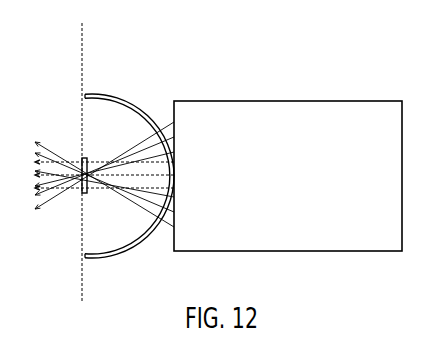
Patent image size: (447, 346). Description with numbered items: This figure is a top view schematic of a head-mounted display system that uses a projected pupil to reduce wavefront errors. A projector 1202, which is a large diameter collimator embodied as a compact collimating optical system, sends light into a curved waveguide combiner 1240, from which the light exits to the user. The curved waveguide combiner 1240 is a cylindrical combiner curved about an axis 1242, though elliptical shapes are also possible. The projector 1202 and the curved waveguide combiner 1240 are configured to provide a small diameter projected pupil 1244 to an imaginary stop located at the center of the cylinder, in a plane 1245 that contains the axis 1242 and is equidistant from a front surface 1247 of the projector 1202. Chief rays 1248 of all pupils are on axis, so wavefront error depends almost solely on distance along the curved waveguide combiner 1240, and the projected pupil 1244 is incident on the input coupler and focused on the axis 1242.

The projector 1202 is at (377, 100).
The curved waveguide combiner 1240 is at (109, 93).
The axis 1242 is at (80, 186).
The projected pupil 1244 is at (83, 158).
The plane 1245 is at (82, 47).
The front surface 1247 is at (173, 100).
The chief rays 1248 is at (117, 158).